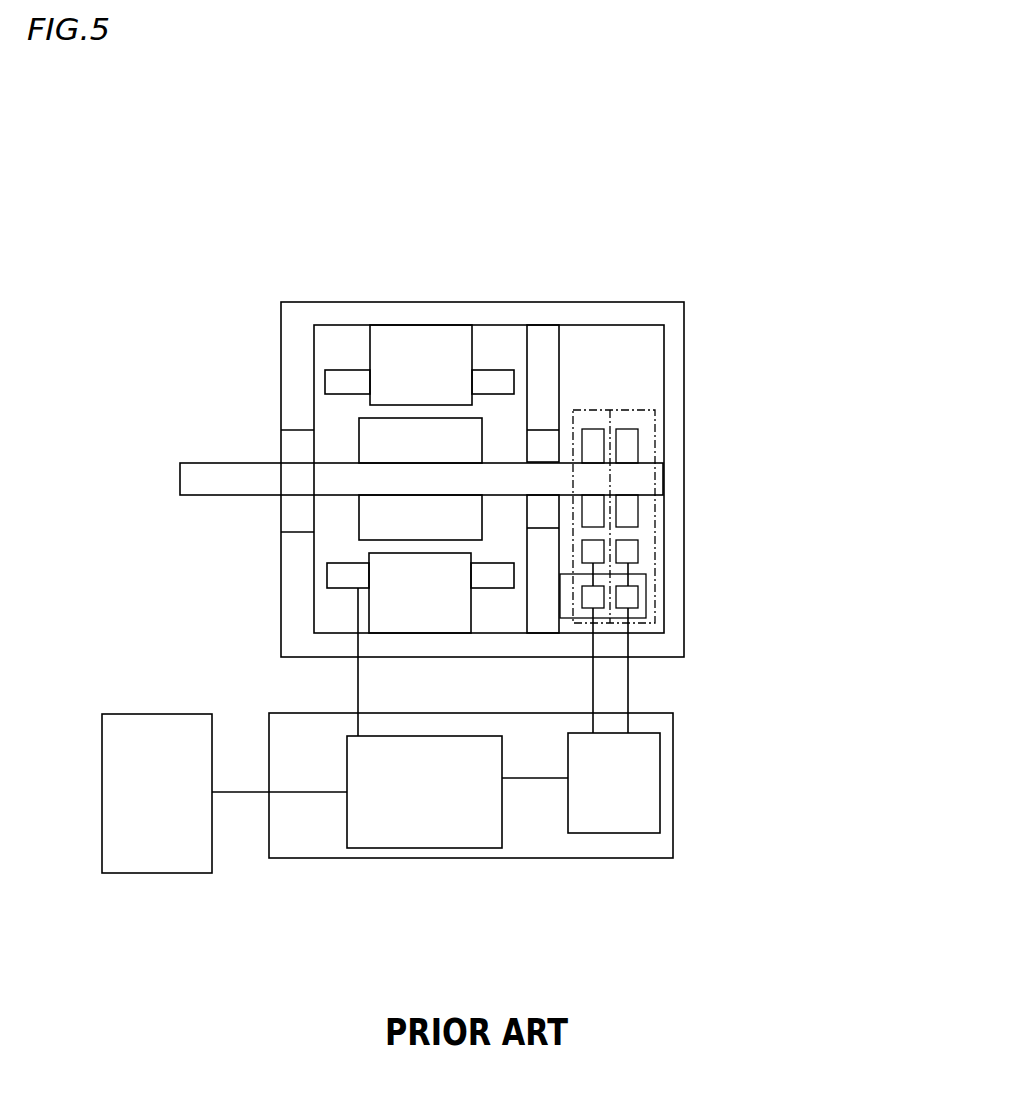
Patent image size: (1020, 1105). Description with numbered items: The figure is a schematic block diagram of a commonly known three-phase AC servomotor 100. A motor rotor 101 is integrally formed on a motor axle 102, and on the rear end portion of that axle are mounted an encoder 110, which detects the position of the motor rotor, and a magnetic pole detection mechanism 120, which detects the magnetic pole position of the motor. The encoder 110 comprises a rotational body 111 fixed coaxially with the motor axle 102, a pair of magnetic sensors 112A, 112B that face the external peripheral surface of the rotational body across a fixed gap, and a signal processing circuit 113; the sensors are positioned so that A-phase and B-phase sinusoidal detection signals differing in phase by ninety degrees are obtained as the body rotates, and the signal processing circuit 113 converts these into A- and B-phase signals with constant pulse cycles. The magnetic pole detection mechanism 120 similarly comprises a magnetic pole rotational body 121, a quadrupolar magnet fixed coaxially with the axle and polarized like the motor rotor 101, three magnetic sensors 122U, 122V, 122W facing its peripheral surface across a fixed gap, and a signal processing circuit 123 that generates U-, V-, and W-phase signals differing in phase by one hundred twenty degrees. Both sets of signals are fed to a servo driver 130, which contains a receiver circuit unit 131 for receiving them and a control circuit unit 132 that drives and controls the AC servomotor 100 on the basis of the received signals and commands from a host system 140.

The AC servomotor 100 is at (226, 227).
The motor rotor 101 is at (427, 432).
The motor axle 102 is at (391, 483).
The encoder 110 is at (690, 512).
The rotational body 111 is at (631, 436).
The magnetic sensor 112A is at (718, 561).
The magnetic sensor 112B is at (630, 551).
The signal processing circuit 113 is at (628, 594).
The magnetic pole detection mechanism 120 is at (687, 528).
The magnetic pole rotational body 121 is at (596, 436).
The magnetic sensor 122U is at (735, 533).
The magnetic sensor 122V is at (593, 551).
The magnetic sensor 122W is at (595, 549).
The signal processing circuit 123 is at (590, 594).
The servo driver 130 is at (518, 825).
The receiver circuit unit 131 is at (612, 835).
The control circuit unit 132 is at (455, 838).
The host system 140 is at (139, 714).